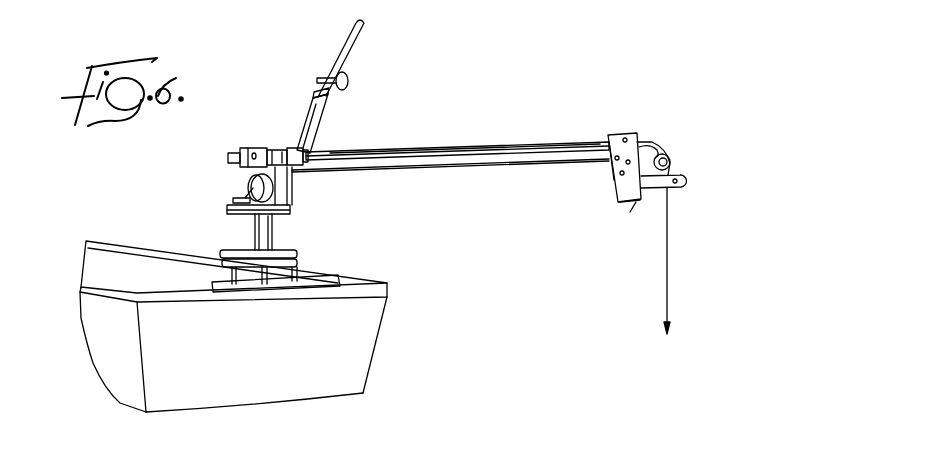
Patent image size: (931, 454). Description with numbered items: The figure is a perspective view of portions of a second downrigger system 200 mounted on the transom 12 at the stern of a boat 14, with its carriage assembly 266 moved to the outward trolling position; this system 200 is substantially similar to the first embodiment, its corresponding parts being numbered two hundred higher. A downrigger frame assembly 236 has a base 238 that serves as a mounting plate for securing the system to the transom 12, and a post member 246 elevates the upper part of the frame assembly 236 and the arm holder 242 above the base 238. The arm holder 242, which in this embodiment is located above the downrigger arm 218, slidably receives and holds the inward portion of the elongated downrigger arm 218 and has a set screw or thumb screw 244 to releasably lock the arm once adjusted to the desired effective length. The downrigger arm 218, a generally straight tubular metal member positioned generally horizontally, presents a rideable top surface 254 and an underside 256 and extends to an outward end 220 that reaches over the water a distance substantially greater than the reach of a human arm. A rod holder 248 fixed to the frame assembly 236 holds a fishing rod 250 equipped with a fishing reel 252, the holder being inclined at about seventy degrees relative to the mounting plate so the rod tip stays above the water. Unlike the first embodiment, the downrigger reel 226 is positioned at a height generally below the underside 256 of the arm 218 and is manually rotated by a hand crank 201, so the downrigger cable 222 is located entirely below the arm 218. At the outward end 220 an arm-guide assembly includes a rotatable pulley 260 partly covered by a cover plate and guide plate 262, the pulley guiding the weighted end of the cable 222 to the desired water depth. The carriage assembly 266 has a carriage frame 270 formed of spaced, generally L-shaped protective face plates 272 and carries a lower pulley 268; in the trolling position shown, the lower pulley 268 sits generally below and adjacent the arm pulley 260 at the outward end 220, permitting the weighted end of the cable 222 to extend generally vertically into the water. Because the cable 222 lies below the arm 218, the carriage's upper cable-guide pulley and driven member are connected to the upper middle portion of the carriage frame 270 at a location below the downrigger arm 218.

The transom 12 is at (345, 282).
The boat 14 is at (362, 338).
The downrigger system 200 is at (450, 174).
The hand crank 201 is at (245, 199).
The downrigger arm 218 is at (443, 148).
The outward end 220 is at (645, 138).
The downrigger cable 222 is at (670, 280).
The downrigger reel 226 is at (250, 180).
The downrigger frame assembly 236 is at (284, 248).
The base 238 is at (225, 280).
The arm holder 242 is at (241, 148).
The thumb screw 244 is at (265, 148).
The post member 246 is at (256, 232).
The rod holder 248 is at (326, 116).
The fishing rod 250 is at (352, 41).
The fishing reel 252 is at (350, 82).
The rideable top surface 254 is at (522, 129).
The underside 256 is at (412, 163).
The rotatable pulley 260 is at (671, 160).
The cover plate and guide plate 262 is at (661, 150).
The carriage assembly 266 is at (624, 133).
The lower pulley 268 is at (682, 182).
The carriage frame 270 is at (614, 190).
The face plate 272 is at (642, 203).